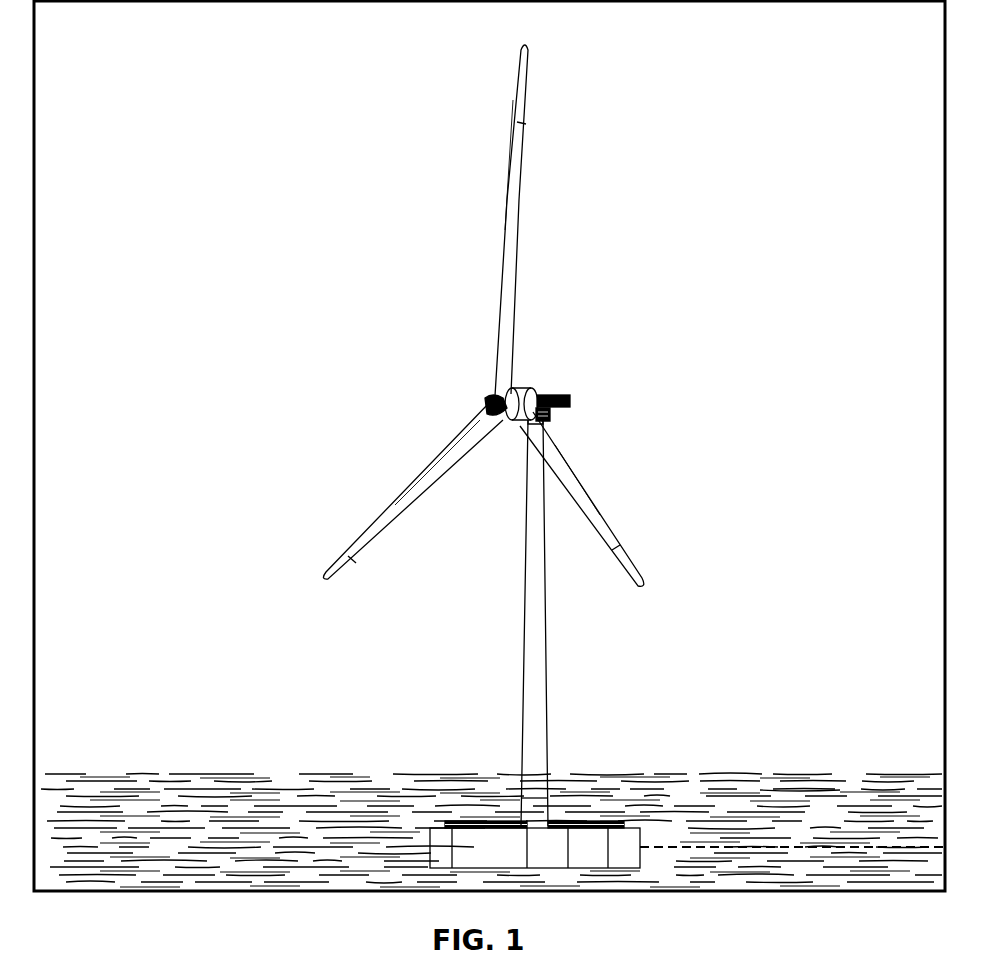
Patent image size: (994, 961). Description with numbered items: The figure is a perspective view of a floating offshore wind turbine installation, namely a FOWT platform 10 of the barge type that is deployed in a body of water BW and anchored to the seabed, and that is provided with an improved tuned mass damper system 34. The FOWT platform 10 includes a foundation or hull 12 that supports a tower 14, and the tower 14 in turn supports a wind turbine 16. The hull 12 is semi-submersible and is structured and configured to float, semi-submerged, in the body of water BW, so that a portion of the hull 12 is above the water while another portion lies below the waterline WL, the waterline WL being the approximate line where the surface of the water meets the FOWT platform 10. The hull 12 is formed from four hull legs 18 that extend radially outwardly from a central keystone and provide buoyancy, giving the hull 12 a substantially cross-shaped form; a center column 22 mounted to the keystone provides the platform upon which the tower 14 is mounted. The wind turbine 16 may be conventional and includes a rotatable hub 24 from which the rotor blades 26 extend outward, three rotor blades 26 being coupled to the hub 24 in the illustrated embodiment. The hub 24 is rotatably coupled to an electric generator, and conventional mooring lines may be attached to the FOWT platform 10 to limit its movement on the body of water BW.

The FOWT platform 10 is at (452, 770).
The hull 12 is at (430, 850).
The tower 14 is at (528, 592).
The wind turbine 16 is at (484, 237).
The hull legs 18 is at (440, 827).
The center column 22 is at (520, 805).
The hub 24 is at (522, 388).
The rotor blade 26 is at (527, 132).
The tuned mass damper system 34 is at (606, 822).
The waterline WL is at (738, 846).
The body of water BW is at (832, 788).